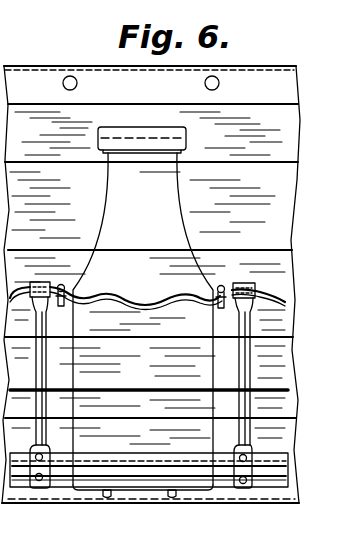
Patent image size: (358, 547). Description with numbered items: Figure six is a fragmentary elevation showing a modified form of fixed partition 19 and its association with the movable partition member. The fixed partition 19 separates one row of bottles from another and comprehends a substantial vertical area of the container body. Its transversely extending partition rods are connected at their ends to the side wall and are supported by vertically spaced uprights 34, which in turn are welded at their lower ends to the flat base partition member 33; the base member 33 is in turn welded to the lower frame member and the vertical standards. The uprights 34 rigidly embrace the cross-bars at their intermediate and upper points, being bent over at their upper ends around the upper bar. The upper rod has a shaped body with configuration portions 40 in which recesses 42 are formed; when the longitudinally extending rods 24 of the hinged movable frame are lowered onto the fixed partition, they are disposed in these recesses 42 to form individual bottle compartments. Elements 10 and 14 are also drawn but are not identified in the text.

The board 10 is at (292, 130).
The hooks 14 is at (170, 498).
The fixed partition 19 is at (46, 408).
The rods 24 is at (62, 289).
The flat base partition member 33 is at (272, 482).
The uprights 34 is at (62, 450).
The configuration portions 40 is at (62, 306).
The recesses 42 is at (60, 285).